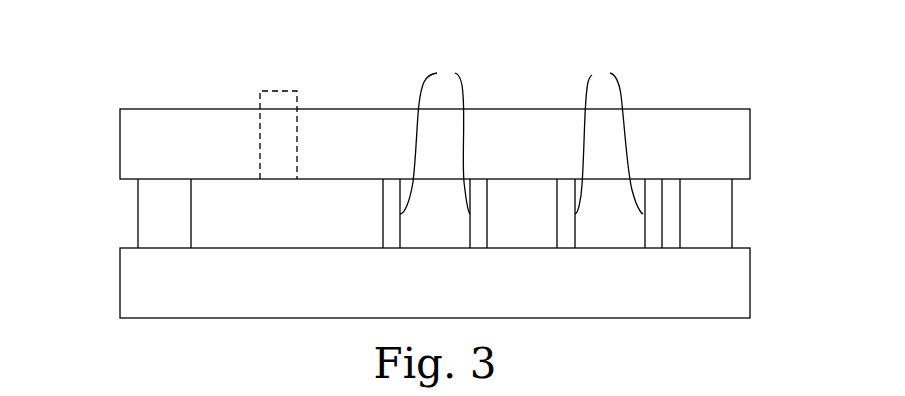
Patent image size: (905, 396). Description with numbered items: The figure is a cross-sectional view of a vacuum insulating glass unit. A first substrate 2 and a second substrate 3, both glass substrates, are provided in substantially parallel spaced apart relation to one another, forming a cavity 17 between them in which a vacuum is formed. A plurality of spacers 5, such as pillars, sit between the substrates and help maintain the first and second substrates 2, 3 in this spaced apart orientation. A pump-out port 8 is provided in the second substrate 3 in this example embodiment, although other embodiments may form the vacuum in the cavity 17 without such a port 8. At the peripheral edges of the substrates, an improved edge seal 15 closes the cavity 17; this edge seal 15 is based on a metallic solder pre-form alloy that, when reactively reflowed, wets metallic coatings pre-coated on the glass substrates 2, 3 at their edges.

The first substrate 2 is at (750, 283).
The second substrate 3 is at (750, 145).
The spacers 5 is at (521, 140).
The pump-out port 8 is at (278, 91).
The improved edge seal 15 is at (138, 212).
The cavity 17 is at (291, 222).